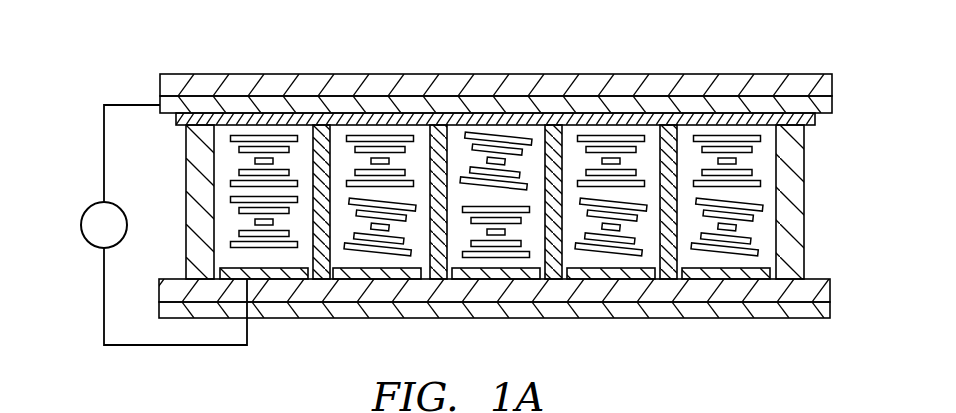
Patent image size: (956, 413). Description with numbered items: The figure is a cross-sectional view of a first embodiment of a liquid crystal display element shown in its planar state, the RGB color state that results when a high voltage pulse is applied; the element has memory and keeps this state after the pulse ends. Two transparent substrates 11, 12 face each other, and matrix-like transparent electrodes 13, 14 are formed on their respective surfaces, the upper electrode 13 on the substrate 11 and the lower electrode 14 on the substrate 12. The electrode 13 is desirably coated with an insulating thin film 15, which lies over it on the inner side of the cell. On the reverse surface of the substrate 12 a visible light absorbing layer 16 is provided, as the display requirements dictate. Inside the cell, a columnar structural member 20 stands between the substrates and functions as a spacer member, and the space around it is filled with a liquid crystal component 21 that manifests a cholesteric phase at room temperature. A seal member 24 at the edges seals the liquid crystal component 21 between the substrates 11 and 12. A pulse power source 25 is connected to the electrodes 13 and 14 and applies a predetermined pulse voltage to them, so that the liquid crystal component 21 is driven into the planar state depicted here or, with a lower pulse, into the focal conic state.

The transparent substrate 11 is at (702, 82).
The transparent substrate 12 is at (178, 288).
The transparent electrode 13 is at (226, 100).
The transparent electrode 14 is at (262, 274).
The insulating thin film 15 is at (815, 122).
The visible light absorbing layer 16 is at (822, 306).
The columnar structural member 20 is at (437, 128).
The liquid crystal component 21 is at (305, 128).
The seal member 24 is at (192, 155).
The pulse power source 25 is at (82, 225).